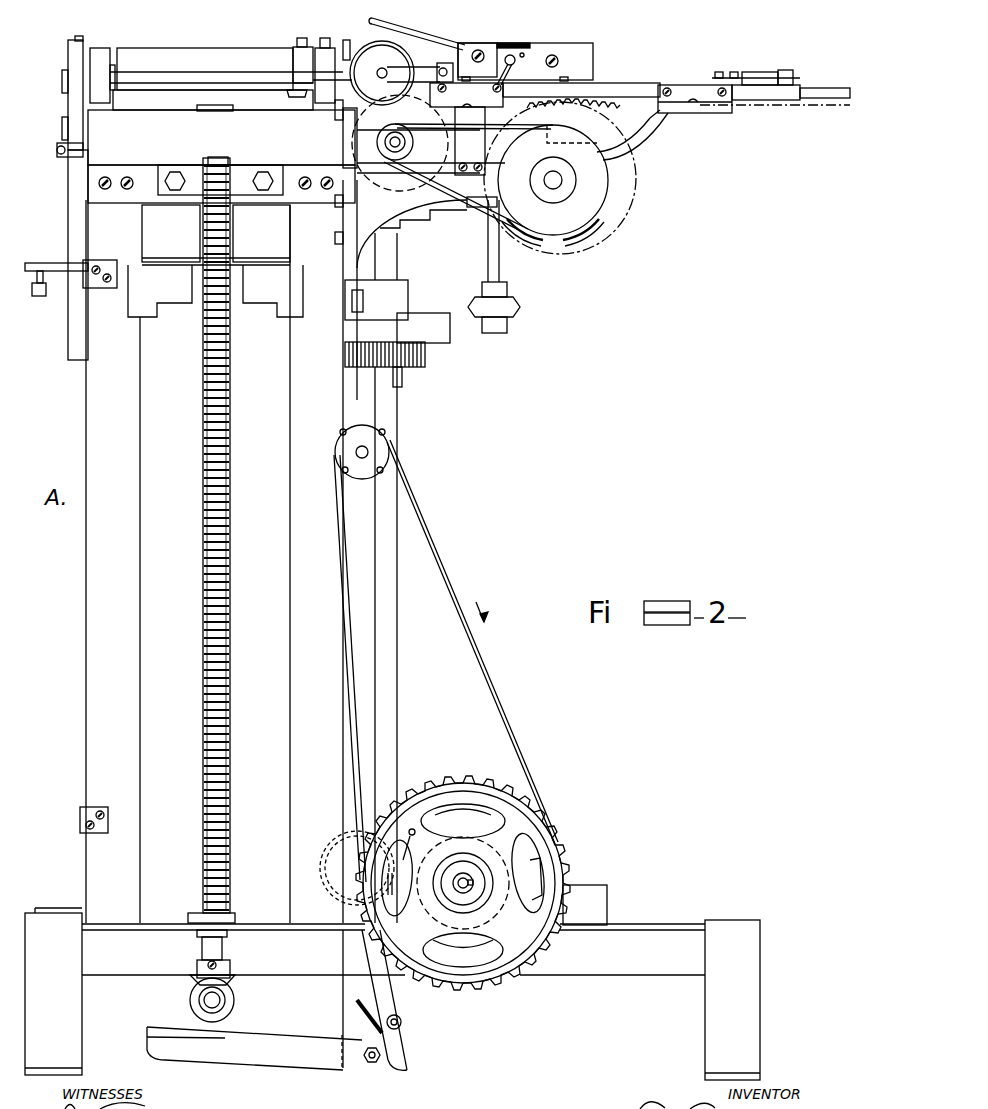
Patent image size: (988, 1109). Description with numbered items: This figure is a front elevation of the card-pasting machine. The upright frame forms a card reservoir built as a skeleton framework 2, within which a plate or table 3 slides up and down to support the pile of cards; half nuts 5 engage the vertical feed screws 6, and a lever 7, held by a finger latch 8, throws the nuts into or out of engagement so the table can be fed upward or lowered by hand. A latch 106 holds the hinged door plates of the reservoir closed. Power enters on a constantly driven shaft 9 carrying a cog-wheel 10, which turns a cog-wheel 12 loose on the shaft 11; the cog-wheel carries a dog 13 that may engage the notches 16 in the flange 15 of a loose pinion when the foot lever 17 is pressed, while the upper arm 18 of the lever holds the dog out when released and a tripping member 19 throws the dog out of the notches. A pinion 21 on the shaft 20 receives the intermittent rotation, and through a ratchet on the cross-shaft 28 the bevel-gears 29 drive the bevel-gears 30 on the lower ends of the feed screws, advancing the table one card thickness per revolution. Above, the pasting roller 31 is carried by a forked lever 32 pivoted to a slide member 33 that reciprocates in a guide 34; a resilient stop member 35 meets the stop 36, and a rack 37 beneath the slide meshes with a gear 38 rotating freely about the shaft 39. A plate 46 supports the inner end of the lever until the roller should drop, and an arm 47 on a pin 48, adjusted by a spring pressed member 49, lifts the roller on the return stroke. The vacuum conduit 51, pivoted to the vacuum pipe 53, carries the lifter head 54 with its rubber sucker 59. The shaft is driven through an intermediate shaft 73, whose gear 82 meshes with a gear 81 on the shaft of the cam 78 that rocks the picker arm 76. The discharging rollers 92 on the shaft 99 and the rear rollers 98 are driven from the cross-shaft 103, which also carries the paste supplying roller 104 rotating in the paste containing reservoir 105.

The skeleton framework 2 is at (140, 527).
The plate or table 3 is at (260, 260).
The half nuts 5 is at (243, 297).
The vertical feed screws 6 is at (230, 403).
The lever 7 is at (47, 263).
The finger latch 8 is at (48, 285).
The shaft 9 is at (356, 452).
The cog-wheel 10 is at (383, 452).
The shaft 11 is at (469, 888).
The cog-wheel 12 is at (448, 790).
The dog 13 is at (460, 822).
The flange 15 is at (520, 876).
The notches 16 is at (455, 824).
The foot lever 17 is at (270, 1045).
The upper arm 18 is at (370, 948).
The block or tripping member 19 is at (582, 890).
The shaft 20 is at (388, 884).
The pinion 21 is at (340, 862).
The cross-shaft 28 is at (204, 1000).
The bevel-gears 29 is at (233, 1001).
The bevel-gears 30 is at (230, 965).
The pasting roller 31 is at (377, 73).
The forked lever 32 is at (427, 62).
The slide member 33 is at (828, 88).
The guide 34 is at (635, 90).
The resilient stop member 35 is at (765, 67).
The abutment or stop 36 is at (790, 74).
The rack 37 is at (596, 103).
The gear 38 is at (628, 184).
The shaft 39 is at (550, 182).
The plate 46 is at (487, 48).
The arm 47 is at (431, 40).
The pin 48 is at (513, 55).
The spring pressed member 49 is at (466, 95).
The vacuum conduit 51 is at (337, 110).
The vacuum pipe 53 is at (488, 256).
The lifter head 54 is at (296, 52).
The rubber sucker 59 is at (287, 93).
The intermediate shaft 73 is at (390, 262).
The picker arm 76 is at (201, 112).
The cam 78 is at (432, 318).
The gear 81 is at (424, 348).
The gear 82 is at (403, 372).
The first pair of discharging rollers 92 is at (100, 50).
The rear pair of rollers 98 is at (184, 95).
The shaft 99 is at (222, 72).
The cross-shaft 103 is at (404, 142).
The paste supplying roller 104 is at (356, 147).
The paste containing reservoir 105 is at (435, 214).
The latch 106 is at (63, 158).